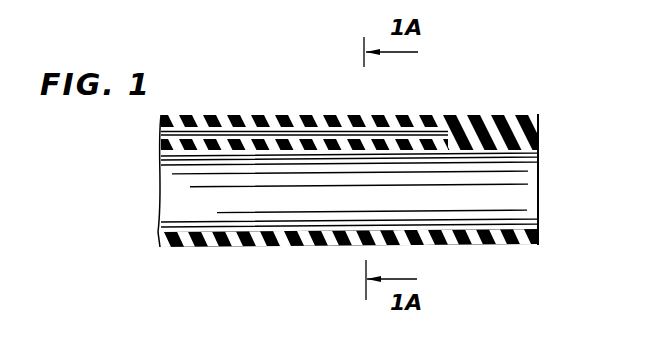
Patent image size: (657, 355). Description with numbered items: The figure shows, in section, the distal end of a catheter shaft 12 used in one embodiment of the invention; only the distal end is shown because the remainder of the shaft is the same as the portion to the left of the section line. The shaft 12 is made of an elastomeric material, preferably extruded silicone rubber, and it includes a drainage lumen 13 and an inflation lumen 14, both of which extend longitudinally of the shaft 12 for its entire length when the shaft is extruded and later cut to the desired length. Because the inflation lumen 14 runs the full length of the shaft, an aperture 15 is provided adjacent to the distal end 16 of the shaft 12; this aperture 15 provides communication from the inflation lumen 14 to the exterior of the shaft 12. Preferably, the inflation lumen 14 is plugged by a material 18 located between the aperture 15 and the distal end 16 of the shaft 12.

The catheter shaft 12 is at (292, 250).
The drainage lumen 13 is at (262, 210).
The inflation lumen 14 is at (297, 128).
The aperture 15 is at (443, 115).
The distal end 16 is at (538, 118).
The material 18 is at (538, 130).